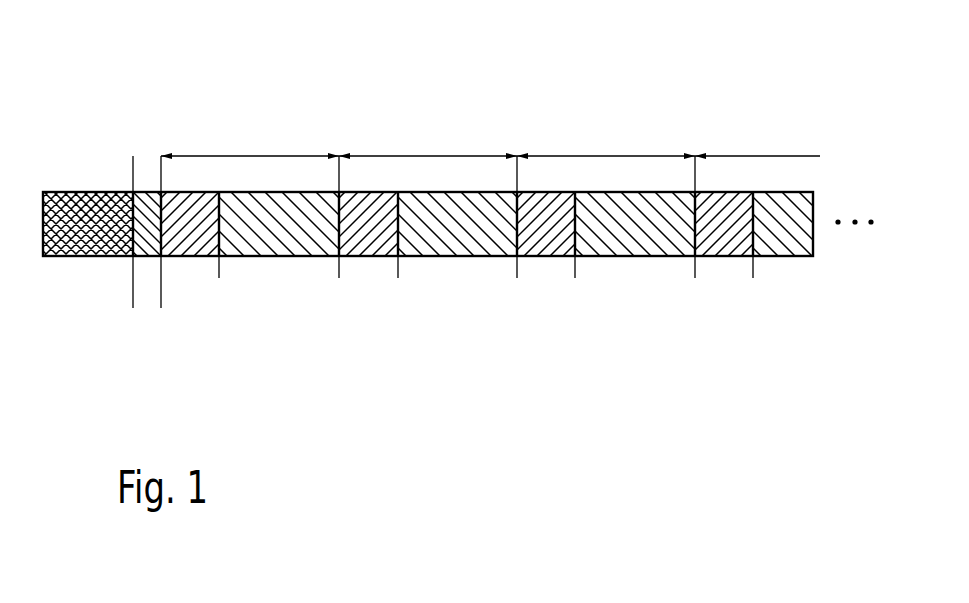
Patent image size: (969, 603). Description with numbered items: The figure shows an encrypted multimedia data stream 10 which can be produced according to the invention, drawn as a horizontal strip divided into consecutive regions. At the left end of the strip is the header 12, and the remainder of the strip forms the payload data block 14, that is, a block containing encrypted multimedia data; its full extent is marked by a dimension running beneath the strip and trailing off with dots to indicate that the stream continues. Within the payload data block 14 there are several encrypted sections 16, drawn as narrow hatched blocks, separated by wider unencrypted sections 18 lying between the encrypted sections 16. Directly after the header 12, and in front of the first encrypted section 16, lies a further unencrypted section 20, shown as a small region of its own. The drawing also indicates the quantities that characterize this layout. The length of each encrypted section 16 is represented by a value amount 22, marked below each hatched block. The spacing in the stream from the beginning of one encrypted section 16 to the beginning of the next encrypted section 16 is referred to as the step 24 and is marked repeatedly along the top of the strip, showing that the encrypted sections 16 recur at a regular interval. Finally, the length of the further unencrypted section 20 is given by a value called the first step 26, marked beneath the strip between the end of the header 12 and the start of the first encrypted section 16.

The encrypted multimedia data stream 10 is at (495, 83).
The header 12 is at (43, 192).
The payload data block 14 is at (132, 358).
The encrypted section 16 is at (197, 195).
The unencrypted section 18 is at (272, 256).
The further unencrypted section 20 is at (147, 196).
The value amount 22 is at (753, 273).
The step 24 is at (210, 156).
The first step 26 is at (133, 303).